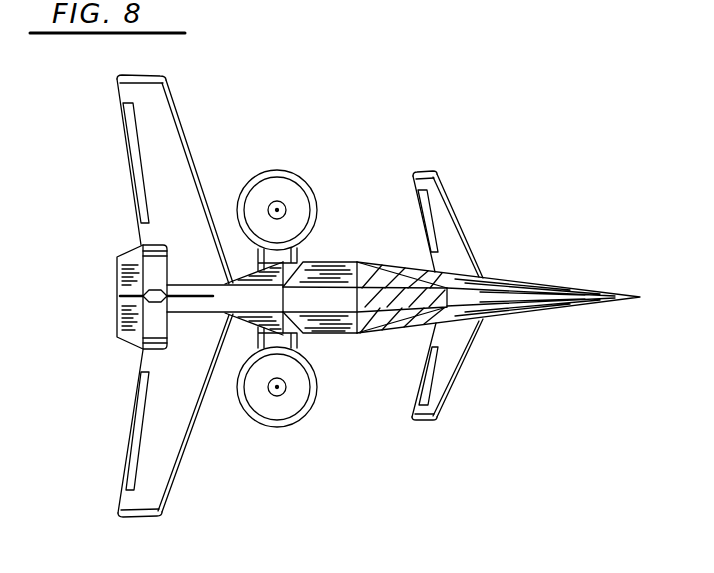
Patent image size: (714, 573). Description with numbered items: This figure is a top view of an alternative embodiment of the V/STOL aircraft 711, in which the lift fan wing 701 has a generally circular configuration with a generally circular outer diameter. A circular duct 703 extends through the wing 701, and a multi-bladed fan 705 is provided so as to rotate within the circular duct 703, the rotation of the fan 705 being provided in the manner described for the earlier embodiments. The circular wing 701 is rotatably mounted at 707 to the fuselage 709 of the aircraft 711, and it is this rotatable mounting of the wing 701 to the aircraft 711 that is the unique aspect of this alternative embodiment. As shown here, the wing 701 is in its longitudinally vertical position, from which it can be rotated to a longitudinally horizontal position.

The lift fan wing 701 is at (310, 182).
The circular duct 703 is at (266, 182).
The multi-bladed fan 705 is at (280, 199).
The rotatable mounting 707 is at (308, 257).
The fuselage 709 is at (550, 283).
The aircraft 711 is at (534, 198).